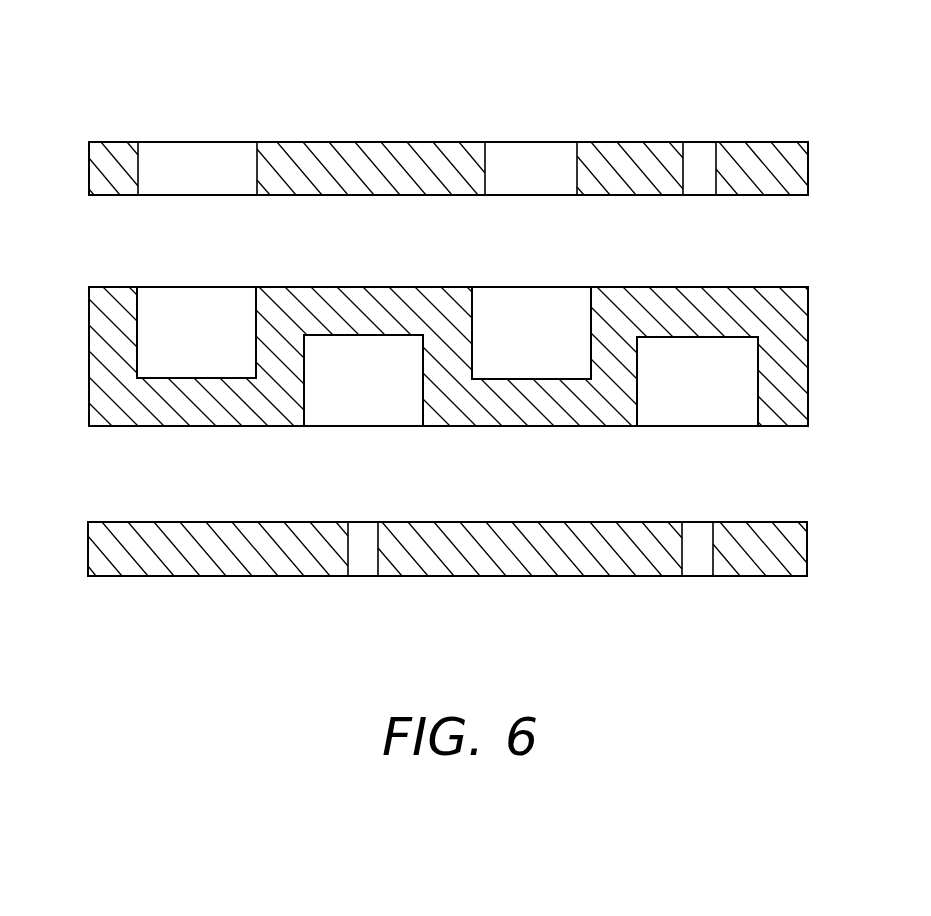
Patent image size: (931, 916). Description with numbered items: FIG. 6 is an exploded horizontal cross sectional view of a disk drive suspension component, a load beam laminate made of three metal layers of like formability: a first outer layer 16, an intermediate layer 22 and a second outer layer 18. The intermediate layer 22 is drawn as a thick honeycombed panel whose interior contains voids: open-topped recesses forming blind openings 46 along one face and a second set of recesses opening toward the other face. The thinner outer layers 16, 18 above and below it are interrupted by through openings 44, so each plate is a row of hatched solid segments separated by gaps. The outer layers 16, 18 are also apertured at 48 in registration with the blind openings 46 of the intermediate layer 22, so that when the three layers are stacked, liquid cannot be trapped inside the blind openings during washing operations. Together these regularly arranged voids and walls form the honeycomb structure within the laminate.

The first outer layer 16 is at (89, 168).
The intermediate layer 22 is at (89, 333).
The second outer layer 18 is at (88, 550).
The through openings 44 is at (690, 142).
The blind openings 46 is at (505, 353).
The apertures 48 is at (358, 520).